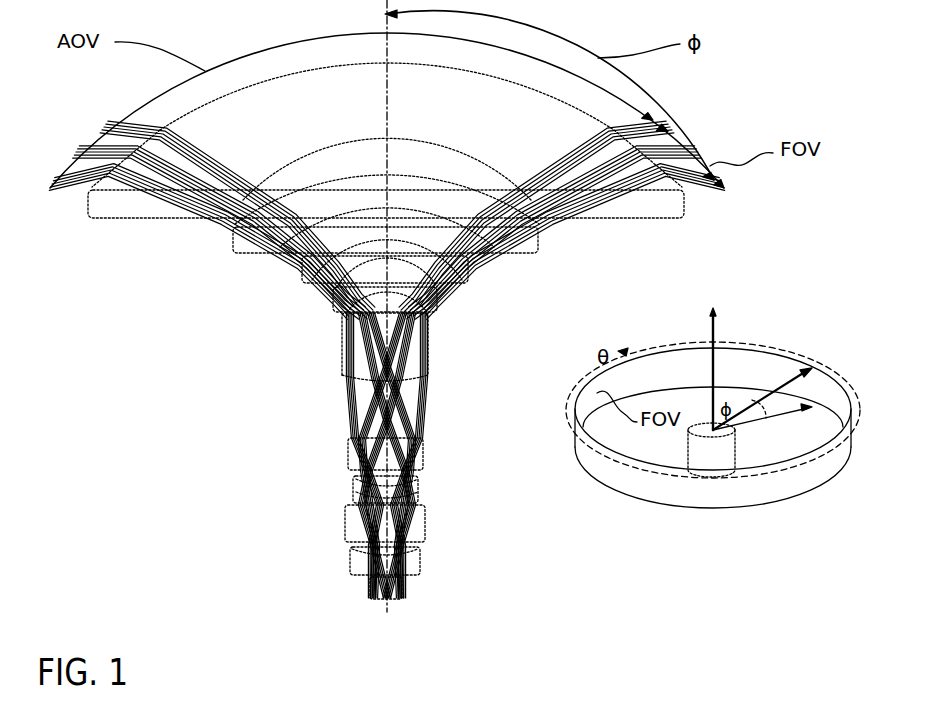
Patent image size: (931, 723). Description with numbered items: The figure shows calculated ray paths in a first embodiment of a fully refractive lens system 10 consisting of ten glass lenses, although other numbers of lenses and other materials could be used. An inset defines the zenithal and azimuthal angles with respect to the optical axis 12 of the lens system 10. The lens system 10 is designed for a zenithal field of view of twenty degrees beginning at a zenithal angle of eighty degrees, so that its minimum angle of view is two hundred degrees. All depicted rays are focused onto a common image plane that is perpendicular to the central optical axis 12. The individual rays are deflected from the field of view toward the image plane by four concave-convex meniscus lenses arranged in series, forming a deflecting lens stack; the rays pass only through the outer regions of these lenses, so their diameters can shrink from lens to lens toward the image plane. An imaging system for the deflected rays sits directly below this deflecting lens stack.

The lens system 10 is at (277, 355).
The optical axis 12 is at (387, 606).